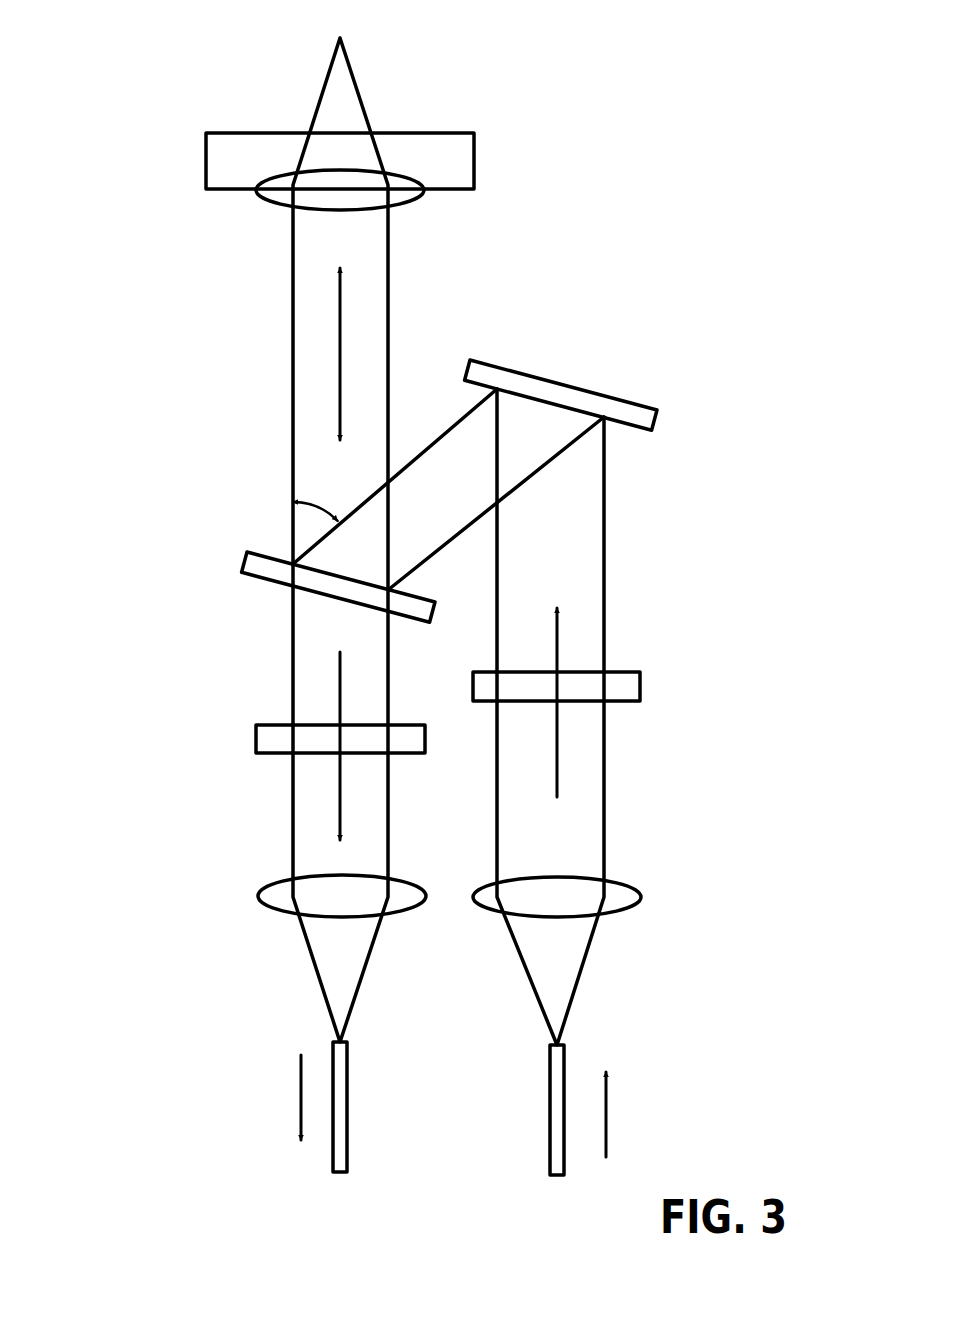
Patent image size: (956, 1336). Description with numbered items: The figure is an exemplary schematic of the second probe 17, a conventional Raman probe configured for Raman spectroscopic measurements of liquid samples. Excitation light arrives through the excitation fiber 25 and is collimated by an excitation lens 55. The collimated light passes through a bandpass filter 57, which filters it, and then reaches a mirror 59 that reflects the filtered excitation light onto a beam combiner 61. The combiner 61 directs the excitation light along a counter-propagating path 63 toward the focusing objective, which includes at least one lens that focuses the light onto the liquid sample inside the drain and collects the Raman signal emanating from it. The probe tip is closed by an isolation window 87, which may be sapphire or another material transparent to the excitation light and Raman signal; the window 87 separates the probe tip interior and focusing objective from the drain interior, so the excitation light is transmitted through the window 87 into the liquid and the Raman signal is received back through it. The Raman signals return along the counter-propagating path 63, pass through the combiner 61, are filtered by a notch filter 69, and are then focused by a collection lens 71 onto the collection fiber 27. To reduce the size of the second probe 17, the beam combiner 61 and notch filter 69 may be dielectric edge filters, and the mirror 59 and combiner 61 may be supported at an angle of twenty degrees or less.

The second probe 17 is at (592, 238).
The isolation window 87 is at (413, 144).
The counter-propagating path 63 is at (338, 337).
The mirror 59 is at (578, 395).
The beam combiner 61 is at (277, 570).
The bandpass filter 57 is at (620, 685).
The notch filter 69 is at (277, 732).
The collection lens 71 is at (278, 897).
The excitation lens 55 is at (623, 895).
The collection fiber 27 is at (342, 1101).
The excitation fiber 25 is at (553, 1093).